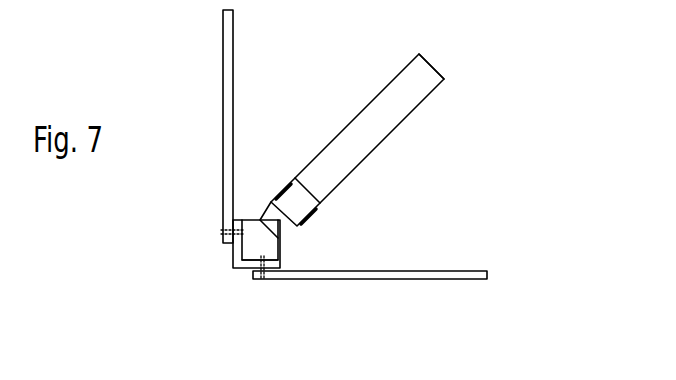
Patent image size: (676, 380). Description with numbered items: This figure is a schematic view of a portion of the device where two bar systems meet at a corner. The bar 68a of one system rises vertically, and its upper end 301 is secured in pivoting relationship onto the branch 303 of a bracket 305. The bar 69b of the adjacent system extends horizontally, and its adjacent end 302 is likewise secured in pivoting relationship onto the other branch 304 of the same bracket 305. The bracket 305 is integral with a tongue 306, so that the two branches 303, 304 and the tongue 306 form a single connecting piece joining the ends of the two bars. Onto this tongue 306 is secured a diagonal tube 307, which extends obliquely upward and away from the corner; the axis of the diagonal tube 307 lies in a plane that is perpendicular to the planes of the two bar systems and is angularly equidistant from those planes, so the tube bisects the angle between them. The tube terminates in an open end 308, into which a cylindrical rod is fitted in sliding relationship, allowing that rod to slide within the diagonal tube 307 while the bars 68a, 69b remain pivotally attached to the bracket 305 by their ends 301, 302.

The bar 68a is at (225, 149).
The bar 69b is at (418, 277).
The upper end 301 is at (221, 234).
The adjacent end 302 is at (263, 279).
The branch 303 is at (238, 219).
The branch 304 is at (279, 267).
The bracket 305 is at (250, 250).
The tongue 306 is at (293, 184).
The diagonal tube 307 is at (378, 146).
The open end 308 is at (433, 66).